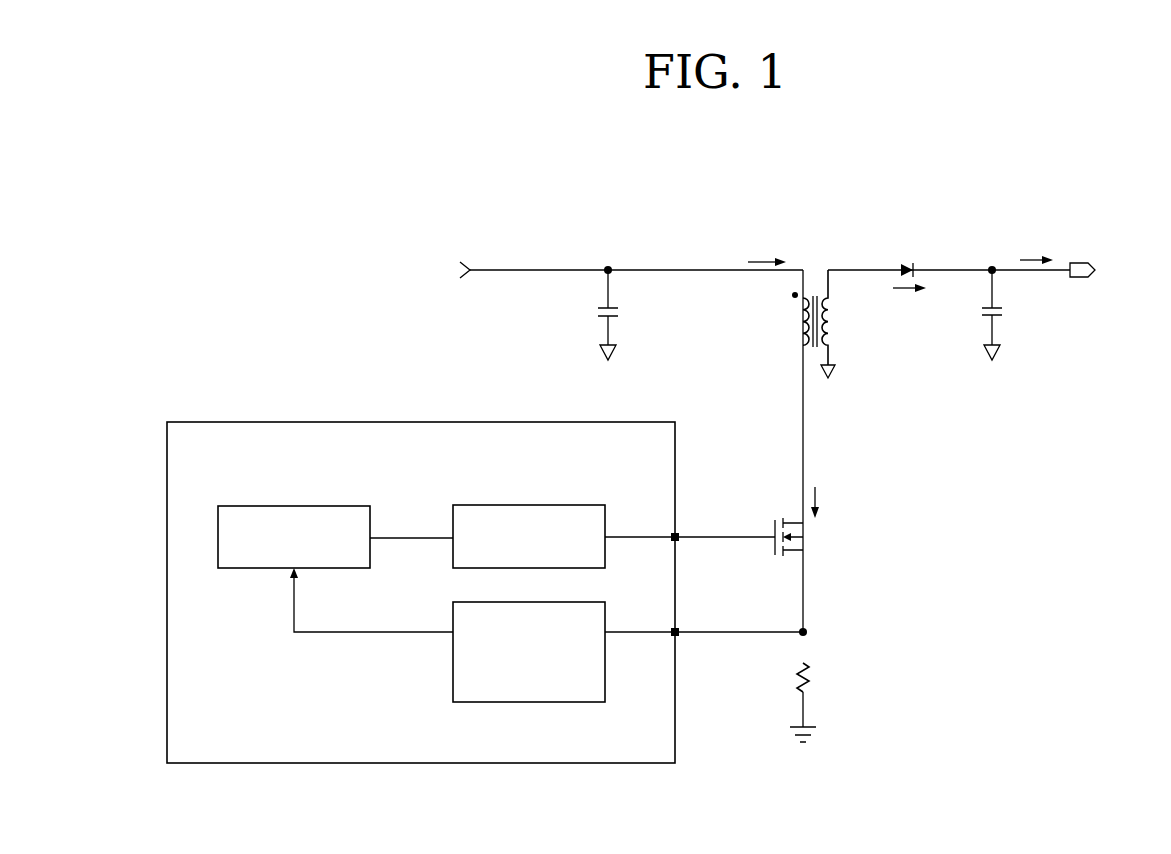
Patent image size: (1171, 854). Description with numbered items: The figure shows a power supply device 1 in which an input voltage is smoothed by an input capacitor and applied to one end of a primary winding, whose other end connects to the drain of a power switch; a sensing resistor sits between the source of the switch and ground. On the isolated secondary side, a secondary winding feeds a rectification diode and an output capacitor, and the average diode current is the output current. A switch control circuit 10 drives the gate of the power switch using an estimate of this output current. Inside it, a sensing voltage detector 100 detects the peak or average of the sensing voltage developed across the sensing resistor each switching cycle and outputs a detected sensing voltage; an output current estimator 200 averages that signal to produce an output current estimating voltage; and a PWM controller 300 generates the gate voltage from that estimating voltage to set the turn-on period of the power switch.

The power supply device 1 is at (985, 184).
The switch control circuit 10 is at (421, 422).
The sensing voltage detector 100 is at (530, 702).
The output current estimator 200 is at (294, 506).
The PWM controller 300 is at (529, 505).